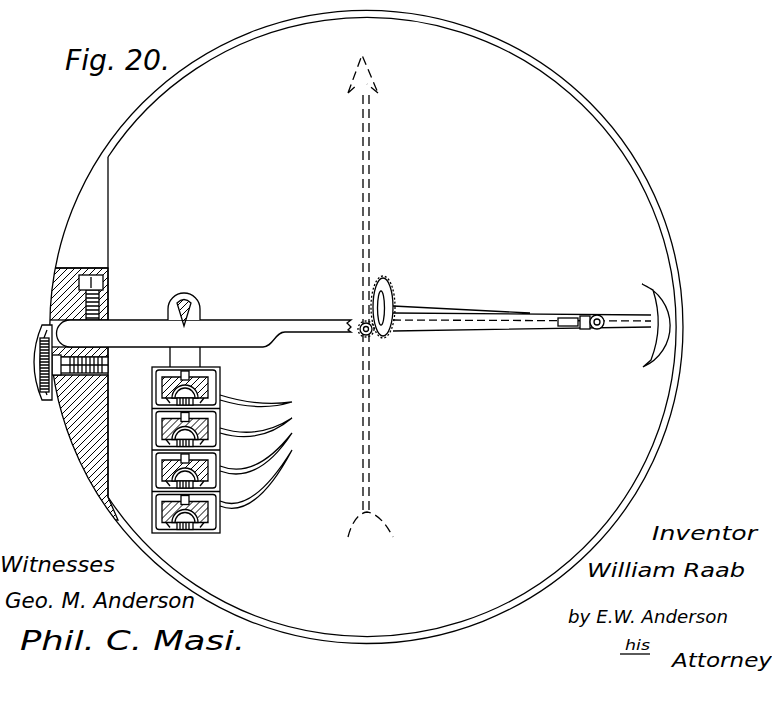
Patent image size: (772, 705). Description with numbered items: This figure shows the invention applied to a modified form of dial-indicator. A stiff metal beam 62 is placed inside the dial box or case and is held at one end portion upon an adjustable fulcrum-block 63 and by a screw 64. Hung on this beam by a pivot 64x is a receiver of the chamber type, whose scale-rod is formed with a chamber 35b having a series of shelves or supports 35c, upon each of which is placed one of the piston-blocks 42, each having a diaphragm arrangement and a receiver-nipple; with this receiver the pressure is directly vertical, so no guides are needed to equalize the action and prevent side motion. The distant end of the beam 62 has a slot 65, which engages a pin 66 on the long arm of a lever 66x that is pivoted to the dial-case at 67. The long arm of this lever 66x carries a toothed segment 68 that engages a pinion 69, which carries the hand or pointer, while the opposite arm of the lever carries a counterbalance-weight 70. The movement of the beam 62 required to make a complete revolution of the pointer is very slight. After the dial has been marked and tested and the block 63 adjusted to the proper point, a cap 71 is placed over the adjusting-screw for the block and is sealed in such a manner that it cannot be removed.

The screw 64 is at (44, 404).
The pivot 64x is at (200, 310).
The adjustable fulcrum-block 63 is at (108, 354).
The cap 71 is at (36, 346).
The stiff metal beam 62 is at (300, 318).
The chamber 35b is at (203, 450).
The shelves or supports 35c is at (156, 424).
The piston-blocks 42 is at (220, 412).
The toothed segment 68 is at (372, 291).
The pinion 69 is at (364, 335).
The slot 65 is at (566, 328).
The pin 66 is at (583, 330).
The lever 66x is at (626, 328).
The pivot on dial-case 67 is at (598, 315).
The counterbalance-weight 70 is at (646, 363).